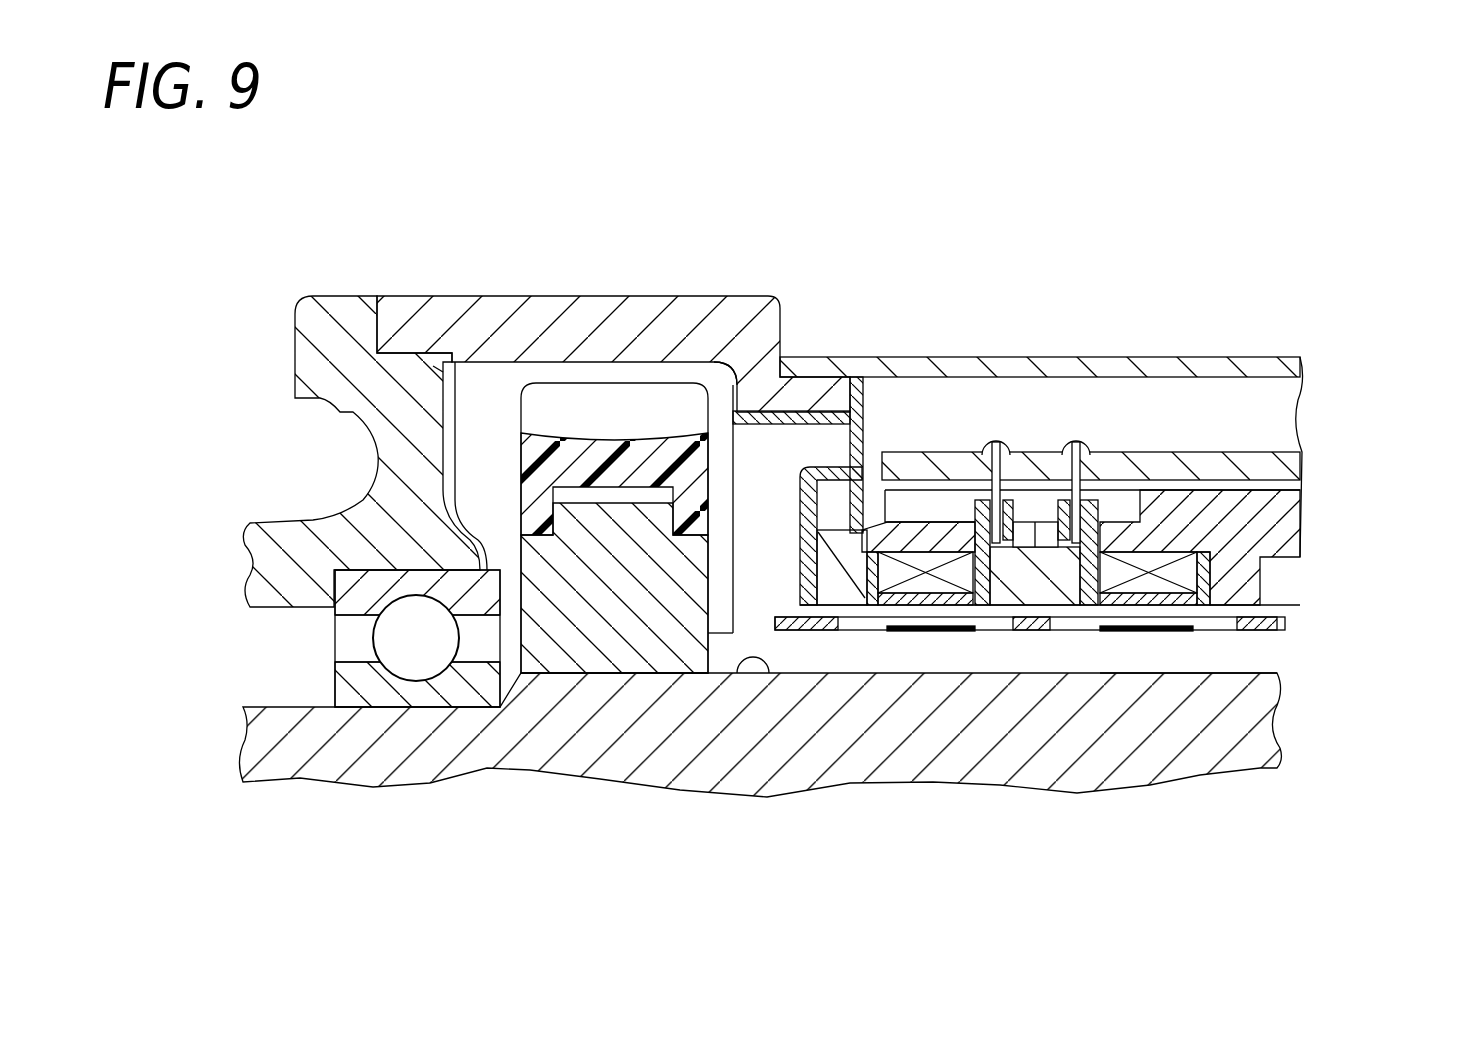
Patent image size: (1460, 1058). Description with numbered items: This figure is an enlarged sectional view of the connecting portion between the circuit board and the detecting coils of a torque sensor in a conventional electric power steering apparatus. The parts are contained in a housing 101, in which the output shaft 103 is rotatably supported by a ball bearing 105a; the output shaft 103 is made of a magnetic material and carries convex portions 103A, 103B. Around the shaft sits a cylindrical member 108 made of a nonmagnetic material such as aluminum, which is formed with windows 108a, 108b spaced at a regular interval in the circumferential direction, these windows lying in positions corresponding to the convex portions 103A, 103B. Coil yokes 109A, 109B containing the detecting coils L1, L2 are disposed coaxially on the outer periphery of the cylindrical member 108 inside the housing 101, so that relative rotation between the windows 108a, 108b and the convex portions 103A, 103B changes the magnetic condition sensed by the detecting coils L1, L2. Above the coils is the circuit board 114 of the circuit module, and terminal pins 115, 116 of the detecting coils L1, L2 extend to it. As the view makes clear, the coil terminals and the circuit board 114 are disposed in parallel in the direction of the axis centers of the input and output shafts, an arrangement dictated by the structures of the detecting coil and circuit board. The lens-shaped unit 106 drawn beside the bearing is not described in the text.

The housing 101 is at (433, 320).
The output shaft 103 is at (297, 747).
The convex portion 103A is at (737, 666).
The convex portion 103B is at (1163, 627).
The ball bearing 105a is at (388, 638).
The lens unit 106 is at (580, 383).
The cylindrical member 108 is at (1287, 620).
The window 108a is at (980, 624).
The window 108b is at (1075, 627).
The coil yoke 109A is at (851, 583).
The coil yoke 109B is at (1232, 578).
The circuit board 114 is at (1300, 450).
The terminal pin 115 is at (975, 456).
The terminal pin 116 is at (1097, 457).
The detecting coil L1 is at (923, 587).
The detecting coil L2 is at (1147, 583).